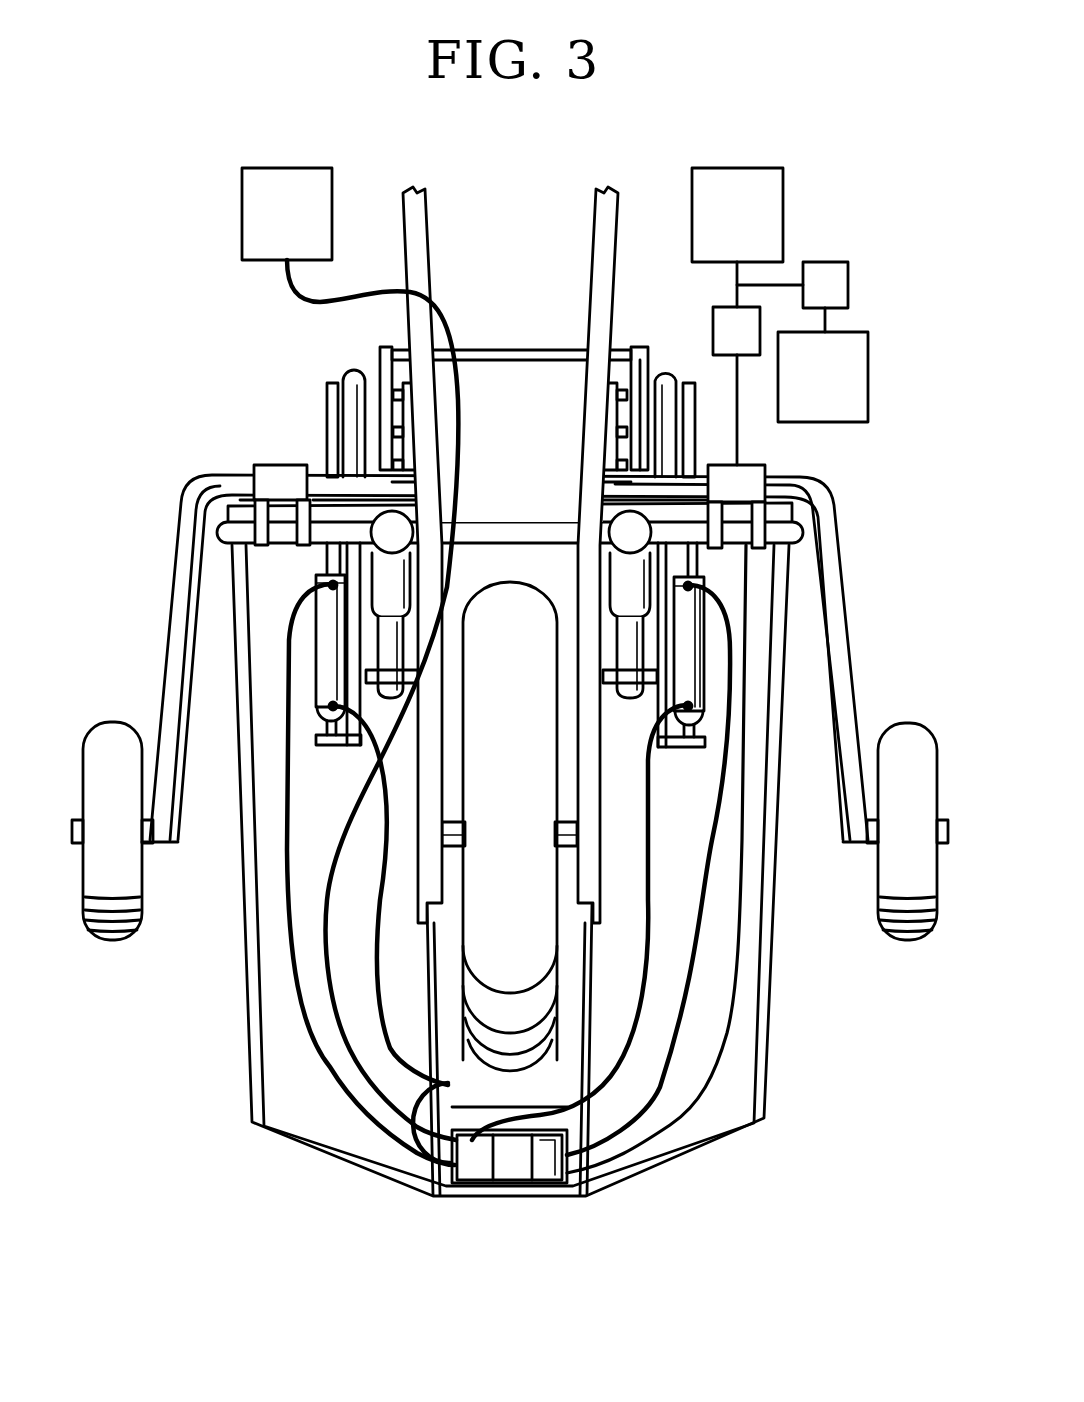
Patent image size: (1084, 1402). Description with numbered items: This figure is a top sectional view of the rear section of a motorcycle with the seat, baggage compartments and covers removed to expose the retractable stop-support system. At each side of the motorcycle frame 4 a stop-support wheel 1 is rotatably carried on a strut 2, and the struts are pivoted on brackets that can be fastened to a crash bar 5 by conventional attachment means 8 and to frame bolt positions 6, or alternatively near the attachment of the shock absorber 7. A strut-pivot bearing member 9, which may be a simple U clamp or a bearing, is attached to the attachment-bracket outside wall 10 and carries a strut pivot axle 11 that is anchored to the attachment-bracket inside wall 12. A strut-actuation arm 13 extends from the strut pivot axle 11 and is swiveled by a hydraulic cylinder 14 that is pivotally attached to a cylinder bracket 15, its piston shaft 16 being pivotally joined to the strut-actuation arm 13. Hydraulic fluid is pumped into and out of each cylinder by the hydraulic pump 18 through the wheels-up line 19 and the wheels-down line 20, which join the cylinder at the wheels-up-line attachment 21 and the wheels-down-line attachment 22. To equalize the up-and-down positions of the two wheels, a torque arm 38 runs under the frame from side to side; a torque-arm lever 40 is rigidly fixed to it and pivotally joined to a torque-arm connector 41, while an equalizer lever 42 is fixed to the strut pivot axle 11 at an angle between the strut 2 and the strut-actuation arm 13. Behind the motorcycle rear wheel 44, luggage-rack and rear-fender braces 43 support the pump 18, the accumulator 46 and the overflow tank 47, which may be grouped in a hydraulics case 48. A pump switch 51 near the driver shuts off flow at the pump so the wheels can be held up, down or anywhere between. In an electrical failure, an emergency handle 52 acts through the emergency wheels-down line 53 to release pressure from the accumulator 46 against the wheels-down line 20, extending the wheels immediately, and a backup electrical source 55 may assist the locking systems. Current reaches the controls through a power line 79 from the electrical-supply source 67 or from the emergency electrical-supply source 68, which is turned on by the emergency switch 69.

The stop-support wheel 1 is at (115, 940).
The strut 2 is at (173, 650).
The motorcycle frame 4 is at (594, 208).
The crash bar 5 is at (217, 532).
The frame bolt positions 6 is at (403, 432).
The shock absorber 7 is at (380, 630).
The attachment means 8 is at (253, 510).
The strut-pivot bearing member 9 is at (255, 465).
The attachment-bracket outside wall 10 is at (228, 515).
The strut pivot axle 11 is at (612, 480).
The attachment-bracket inside wall 12 is at (612, 412).
The strut-actuation arm 13 is at (350, 426).
The hydraulic cylinder 14 is at (693, 628).
The cylinder bracket 15 is at (668, 660).
The piston shaft 16 is at (327, 553).
The hydraulic pump 18 is at (480, 1178).
The wheels-up line 19 is at (300, 1003).
The wheels-down line 20 is at (370, 1042).
The wheels-up-line attachment 21 is at (328, 583).
The wheels-down-line attachment 22 is at (330, 706).
The torque arm 38 is at (553, 350).
The torque-arm lever 40 is at (633, 350).
The torque-arm connector 41 is at (651, 375).
The equalizer lever 42 is at (636, 468).
The luggage-rack and rear-fender braces 43 is at (340, 1165).
The motorcycle rear wheel 44 is at (463, 950).
The accumulator 46 is at (512, 1167).
The overflow tank 47 is at (550, 1167).
The hydraulics case 48 is at (558, 1200).
The pump switch 51 is at (722, 345).
The emergency handle 52 is at (272, 223).
The emergency wheels-down line 53 is at (372, 290).
The backup electrical source 55 is at (408, 1118).
The electrical-supply source 67 is at (722, 223).
The emergency electrical-supply source 68 is at (808, 393).
The emergency switch 69 is at (840, 301).
The power line 79 is at (742, 448).